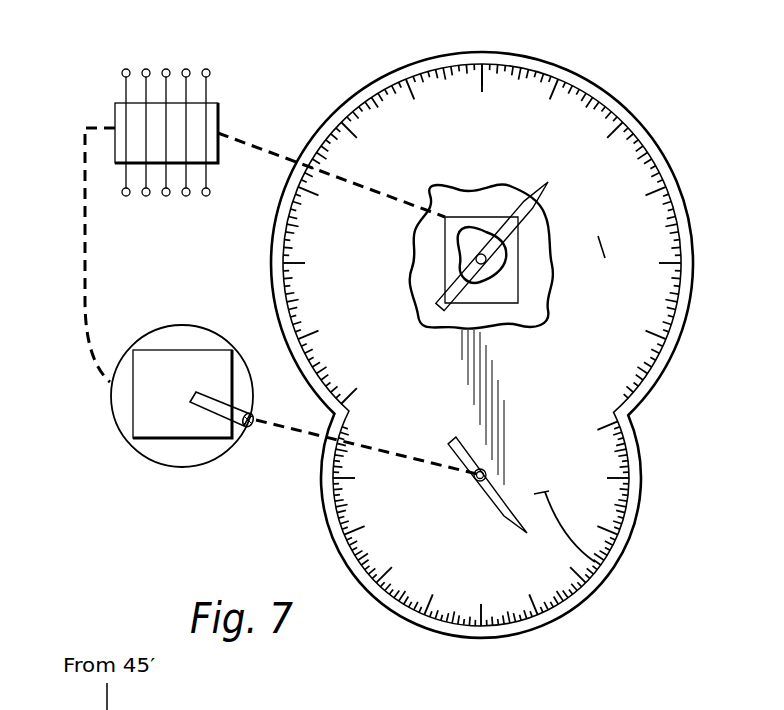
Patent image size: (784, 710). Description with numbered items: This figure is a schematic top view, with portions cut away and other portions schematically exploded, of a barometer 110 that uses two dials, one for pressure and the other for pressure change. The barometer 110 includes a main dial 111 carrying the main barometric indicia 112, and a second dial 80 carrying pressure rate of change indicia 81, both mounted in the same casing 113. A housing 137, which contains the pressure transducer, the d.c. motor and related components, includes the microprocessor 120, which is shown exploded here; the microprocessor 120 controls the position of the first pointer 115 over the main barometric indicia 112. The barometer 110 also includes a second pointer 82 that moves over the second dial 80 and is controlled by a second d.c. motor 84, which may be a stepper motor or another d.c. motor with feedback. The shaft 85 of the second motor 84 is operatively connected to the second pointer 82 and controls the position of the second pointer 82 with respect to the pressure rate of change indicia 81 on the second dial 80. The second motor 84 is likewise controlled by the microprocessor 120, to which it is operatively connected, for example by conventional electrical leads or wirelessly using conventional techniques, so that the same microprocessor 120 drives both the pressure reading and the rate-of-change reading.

The barometer 110 is at (648, 96).
The dial 111 is at (603, 245).
The main barometric indicia 112 is at (465, 88).
The casing 113 is at (697, 266).
The first pointer 115 is at (541, 186).
The housing 137 is at (536, 250).
The second pointer 82 is at (498, 504).
The second dial 80 is at (595, 562).
The pressure rate of change indicia 81 is at (597, 495).
The second d.c. motor 84 is at (157, 418).
The shaft 85 is at (223, 420).
The microprocessor 120 is at (115, 117).